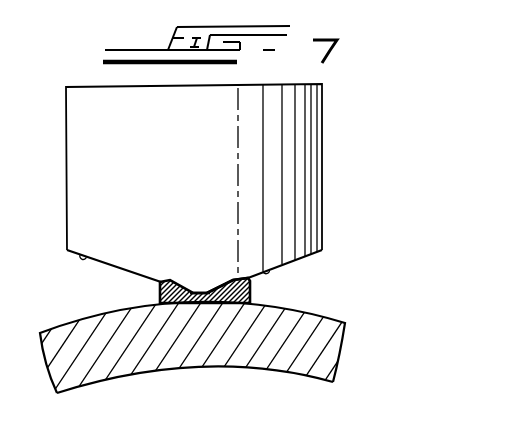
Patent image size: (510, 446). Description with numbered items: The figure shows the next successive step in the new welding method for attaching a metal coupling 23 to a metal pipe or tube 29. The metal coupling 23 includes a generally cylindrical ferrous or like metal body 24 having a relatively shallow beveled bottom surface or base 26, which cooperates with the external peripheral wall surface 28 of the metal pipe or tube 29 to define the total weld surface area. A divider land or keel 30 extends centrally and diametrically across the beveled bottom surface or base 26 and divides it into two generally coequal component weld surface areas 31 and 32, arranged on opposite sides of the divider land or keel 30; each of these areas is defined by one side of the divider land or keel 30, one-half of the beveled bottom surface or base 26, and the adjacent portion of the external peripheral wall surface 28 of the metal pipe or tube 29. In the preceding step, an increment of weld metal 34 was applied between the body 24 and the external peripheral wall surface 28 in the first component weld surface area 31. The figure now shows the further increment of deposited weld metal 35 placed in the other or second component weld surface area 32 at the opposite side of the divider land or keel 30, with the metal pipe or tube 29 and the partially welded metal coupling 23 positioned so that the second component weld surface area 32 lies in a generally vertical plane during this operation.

The metal coupling 23 is at (330, 149).
The generally cylindrical metal body 24 is at (292, 138).
The beveled bottom surface or base 26 is at (88, 255).
The external peripheral wall surface 28 is at (322, 318).
The metal pipe or tube 29 is at (300, 362).
The divider land or keel 30 is at (200, 291).
The first component weld surface area 31 is at (140, 283).
The second component weld surface area 32 is at (275, 279).
The first increment of weld metal 34 is at (173, 280).
The second increment of weld metal 35 is at (227, 278).